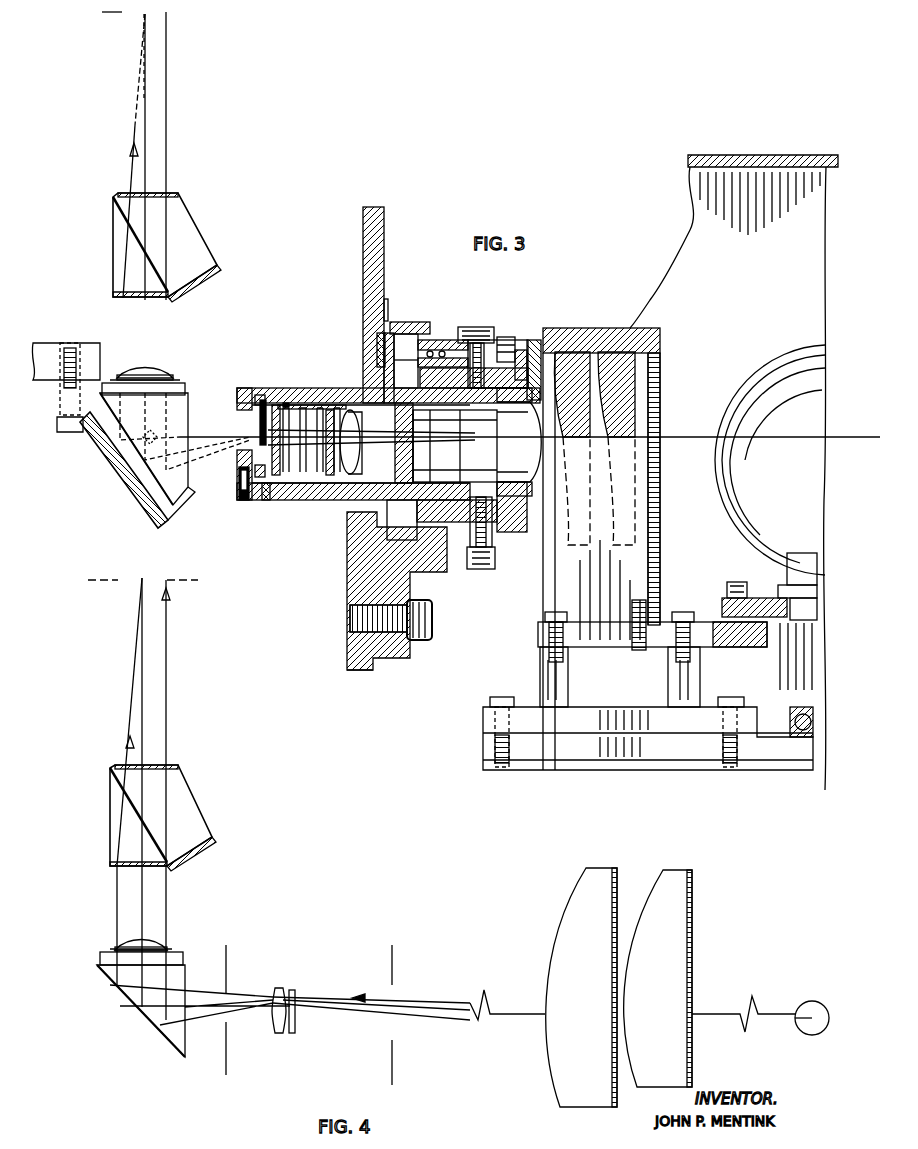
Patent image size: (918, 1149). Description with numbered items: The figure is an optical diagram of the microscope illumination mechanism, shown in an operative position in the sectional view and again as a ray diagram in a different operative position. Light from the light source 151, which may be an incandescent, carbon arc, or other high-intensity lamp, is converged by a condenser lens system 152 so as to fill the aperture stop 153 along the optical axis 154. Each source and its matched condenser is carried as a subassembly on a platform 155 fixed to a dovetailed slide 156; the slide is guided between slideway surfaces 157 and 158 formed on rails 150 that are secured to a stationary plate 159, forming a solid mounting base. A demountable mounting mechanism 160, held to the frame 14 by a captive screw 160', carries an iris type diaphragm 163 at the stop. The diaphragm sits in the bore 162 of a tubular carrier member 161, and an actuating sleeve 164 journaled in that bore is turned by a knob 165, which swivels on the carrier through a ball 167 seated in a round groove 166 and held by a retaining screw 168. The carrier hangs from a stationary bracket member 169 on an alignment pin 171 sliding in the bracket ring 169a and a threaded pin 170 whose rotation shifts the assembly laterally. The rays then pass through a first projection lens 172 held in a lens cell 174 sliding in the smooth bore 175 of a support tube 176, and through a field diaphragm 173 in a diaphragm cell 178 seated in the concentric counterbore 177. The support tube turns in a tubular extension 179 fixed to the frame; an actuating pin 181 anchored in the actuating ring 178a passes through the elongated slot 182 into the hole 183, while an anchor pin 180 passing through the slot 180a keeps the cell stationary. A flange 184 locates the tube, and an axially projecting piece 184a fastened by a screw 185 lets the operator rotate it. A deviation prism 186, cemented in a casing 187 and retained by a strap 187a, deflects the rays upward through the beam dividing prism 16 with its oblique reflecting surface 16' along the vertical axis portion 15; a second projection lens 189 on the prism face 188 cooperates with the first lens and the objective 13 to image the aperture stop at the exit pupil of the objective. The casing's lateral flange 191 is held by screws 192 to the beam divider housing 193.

In FIG. 3, the objective 13 is at (168, 18).
In FIG. 3, the frame 14 is at (363, 239).
In FIG. 3, the vertical portion of the optical axis 15 is at (146, 156).
In FIG. 4, the vertical portion of the optical axis 15 is at (146, 708).
In FIG. 3, the beam dividing prism 16 is at (141, 247).
In FIG. 4, the beam dividing prism 16 is at (140, 818).
In FIG. 3, the oblique reflecting surface 16' is at (155, 244).
In FIG. 4, the oblique reflecting surface 16' is at (152, 815).
In FIG. 3, the rails 150 is at (500, 720).
In FIG. 3, the light source 151 is at (800, 350).
In FIG. 4, the light source 151 is at (812, 1001).
In FIG. 3, the condenser lens system 152 is at (655, 382).
In FIG. 4, the condenser lens system 152 is at (700, 860).
In FIG. 4, the aperture stop 153 is at (392, 965).
In FIG. 3, the optical axis of the condenser system 154 is at (513, 452).
In FIG. 4, the optical axis of the condenser system 154 is at (322, 1012).
In FIG. 3, the platform 155 is at (622, 643).
In FIG. 3, the dovetailed slide 156 is at (600, 727).
In FIG. 3, the slideway surface 157 is at (545, 737).
In FIG. 3, the slideway surface 158 is at (702, 732).
In FIG. 3, the stationary plate 159 is at (490, 752).
In FIG. 3, the demountable mounting mechanism 160 is at (383, 680).
In FIG. 3, the captive screw 160' is at (440, 621).
In FIG. 3, the tubular carrier member 161 is at (398, 504).
In FIG. 3, the bore 162 is at (446, 443).
In FIG. 3, the iris type diaphragm 163 is at (388, 403).
In FIG. 3, the actuating sleeve 164 is at (498, 406).
In FIG. 3, the knob 165 is at (522, 350).
In FIG. 3, the round groove 166 is at (516, 368).
In FIG. 3, the ball 167 is at (530, 350).
In FIG. 3, the retaining screw 168 is at (505, 337).
In FIG. 3, the stationary bracket member 169 is at (425, 575).
In FIG. 3, the bracket ring 169a is at (494, 542).
In FIG. 3, the pin 170 is at (478, 327).
In FIG. 3, the alignment pin 171 is at (496, 566).
In FIG. 3, the first projection lens 172 is at (333, 497).
In FIG. 4, the first projection lens 172 is at (278, 1036).
In FIG. 3, the field diaphragm 173 is at (238, 456).
In FIG. 4, the field diaphragm 173 is at (228, 962).
In FIG. 3, the lens cell 174 is at (352, 486).
In FIG. 3, the smooth bore 175 is at (305, 497).
In FIG. 3, the support tube 176 is at (285, 502).
In FIG. 3, the concentric counterbore 177 is at (239, 396).
In FIG. 3, the diaphragm cell 178 is at (240, 418).
In FIG. 3, the actuating ring 178a is at (290, 410).
In FIG. 3, the tubular extension 179 is at (268, 496).
In FIG. 3, the anchor pin 180 is at (241, 478).
In FIG. 3, the circumferentially elongated slot 180a is at (243, 496).
In FIG. 3, the actuating pin 181 is at (262, 400).
In FIG. 3, the circumferentially elongated slot 182 is at (262, 398).
In FIG. 3, the hole 183 is at (283, 405).
In FIG. 3, the flange 184 is at (383, 373).
In FIG. 3, the axially projecting piece 184a is at (418, 322).
In FIG. 3, the screw 185 is at (378, 345).
In FIG. 3, the deviation prism 186 is at (110, 454).
In FIG. 4, the deviation prism 186 is at (112, 985).
In FIG. 3, the prism casing 187 is at (168, 507).
In FIG. 3, the strap 187a is at (146, 487).
In FIG. 3, the face of prism 188 is at (168, 385).
In FIG. 4, the face of prism 188 is at (168, 963).
In FIG. 3, the second projection lens 189 is at (128, 370).
In FIG. 4, the second projection lens 189 is at (120, 948).
In FIG. 3, the lateral flange 191 is at (55, 420).
In FIG. 3, the screws 192 is at (62, 390).
In FIG. 3, the beam divider housing 193 is at (60, 343).